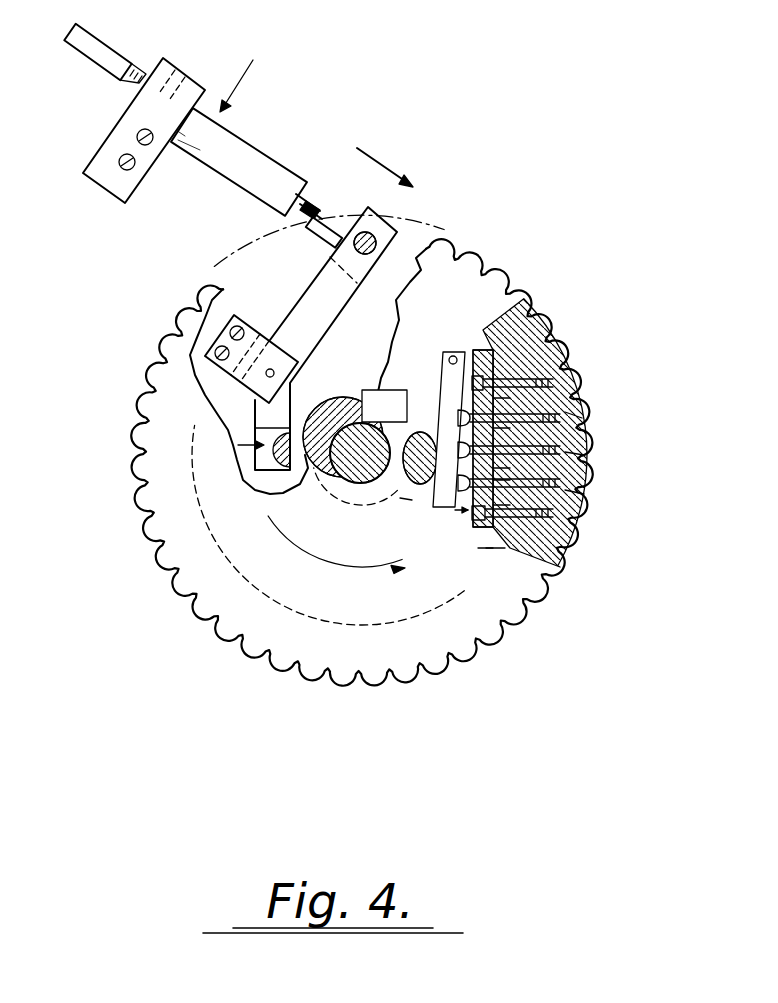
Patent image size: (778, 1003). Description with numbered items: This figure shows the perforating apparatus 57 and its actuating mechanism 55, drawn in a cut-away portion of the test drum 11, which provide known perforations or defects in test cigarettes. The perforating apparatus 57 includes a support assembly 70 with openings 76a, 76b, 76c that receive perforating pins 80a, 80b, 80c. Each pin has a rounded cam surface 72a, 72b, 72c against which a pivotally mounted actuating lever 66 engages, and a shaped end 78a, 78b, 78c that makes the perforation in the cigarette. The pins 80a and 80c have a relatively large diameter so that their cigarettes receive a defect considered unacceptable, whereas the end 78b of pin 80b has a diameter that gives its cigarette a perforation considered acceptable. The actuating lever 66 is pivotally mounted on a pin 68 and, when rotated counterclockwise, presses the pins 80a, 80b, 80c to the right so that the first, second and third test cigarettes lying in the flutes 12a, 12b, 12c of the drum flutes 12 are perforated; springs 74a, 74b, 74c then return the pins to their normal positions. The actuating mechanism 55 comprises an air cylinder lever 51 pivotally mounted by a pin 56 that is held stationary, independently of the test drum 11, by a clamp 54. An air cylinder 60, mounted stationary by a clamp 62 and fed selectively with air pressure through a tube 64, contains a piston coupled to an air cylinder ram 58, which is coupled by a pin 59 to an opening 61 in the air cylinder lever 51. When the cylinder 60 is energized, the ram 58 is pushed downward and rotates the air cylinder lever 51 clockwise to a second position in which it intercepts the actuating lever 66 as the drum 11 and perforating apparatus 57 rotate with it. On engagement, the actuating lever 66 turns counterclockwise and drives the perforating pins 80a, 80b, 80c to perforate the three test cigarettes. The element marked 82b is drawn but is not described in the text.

The test drum 11 is at (284, 609).
The flutes 12 is at (580, 530).
The flute 12a is at (586, 494).
The flute 12b is at (583, 455).
The flute 12c is at (582, 416).
The air cylinder lever 51 is at (292, 342).
The clamp 54 is at (238, 327).
The actuating mechanism 55 is at (216, 141).
The pin 56 is at (276, 373).
The perforating apparatus 57 is at (370, 393).
The air cylinder ram 58 is at (324, 212).
The pin 59 is at (338, 246).
The air cylinder 60 is at (243, 138).
The opening 61 is at (372, 233).
The clamp 62 is at (102, 157).
The tube 64 is at (66, 41).
The actuating lever 66 is at (440, 392).
The pin 68 is at (445, 368).
The support assembly 70 is at (487, 552).
The rounded cam surface 72a is at (480, 556).
The rounded cam surface 72b is at (389, 477).
The rounded cam surface 72c is at (418, 433).
The spring 74a is at (453, 506).
The spring 74b is at (410, 501).
The spring 74c is at (371, 404).
The opening 76a is at (565, 578).
The opening 76b is at (575, 548).
The opening 76c is at (568, 384).
The shaped end 78a is at (586, 482).
The shaped end 78b is at (600, 438).
The shaped end 78c is at (600, 410).
The perforating pin 80a is at (583, 508).
The perforating pin 80b is at (585, 470).
The perforating pin 80c is at (560, 400).
The nut 82b is at (580, 428).